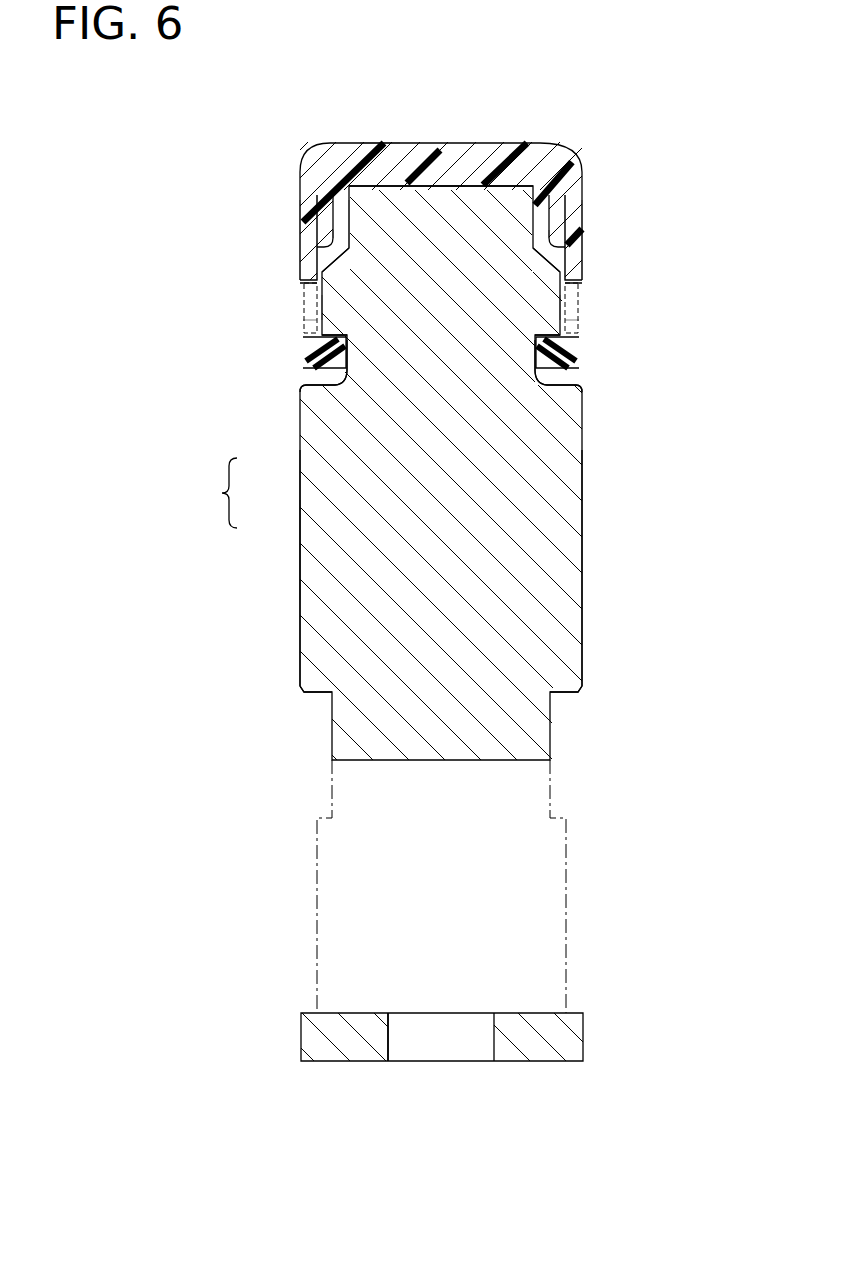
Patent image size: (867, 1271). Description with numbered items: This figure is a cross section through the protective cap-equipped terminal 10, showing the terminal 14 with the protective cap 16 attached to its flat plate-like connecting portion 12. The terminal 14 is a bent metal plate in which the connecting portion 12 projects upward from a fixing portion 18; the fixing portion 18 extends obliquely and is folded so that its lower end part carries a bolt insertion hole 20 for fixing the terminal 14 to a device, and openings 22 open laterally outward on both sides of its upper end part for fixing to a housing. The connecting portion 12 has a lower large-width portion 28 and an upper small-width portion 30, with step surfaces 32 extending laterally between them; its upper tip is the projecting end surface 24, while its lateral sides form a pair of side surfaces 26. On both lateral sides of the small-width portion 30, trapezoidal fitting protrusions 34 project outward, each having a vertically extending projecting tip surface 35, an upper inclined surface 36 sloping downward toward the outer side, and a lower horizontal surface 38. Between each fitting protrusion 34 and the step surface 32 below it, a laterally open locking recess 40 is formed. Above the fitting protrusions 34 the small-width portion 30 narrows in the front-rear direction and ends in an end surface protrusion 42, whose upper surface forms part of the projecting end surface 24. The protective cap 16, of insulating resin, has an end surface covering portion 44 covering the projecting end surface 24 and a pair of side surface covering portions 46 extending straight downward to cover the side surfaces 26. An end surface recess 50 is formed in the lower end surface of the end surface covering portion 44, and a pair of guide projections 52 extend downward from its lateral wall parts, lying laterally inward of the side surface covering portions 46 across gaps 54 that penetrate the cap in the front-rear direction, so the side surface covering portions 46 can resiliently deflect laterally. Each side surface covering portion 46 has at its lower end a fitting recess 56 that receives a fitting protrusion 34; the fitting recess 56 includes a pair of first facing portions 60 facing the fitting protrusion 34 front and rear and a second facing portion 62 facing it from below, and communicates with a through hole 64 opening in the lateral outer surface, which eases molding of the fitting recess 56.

The protective cap-equipped terminal 10 is at (637, 122).
The connecting portion 12 is at (218, 493).
The terminal 14 is at (604, 448).
The protective cap 16 is at (556, 135).
The fixing portion 18 is at (543, 1025).
The bolt insertion hole 20 is at (388, 1062).
The opening 22 is at (305, 697).
The projecting end surface 24 is at (430, 192).
The side surface 26 is at (300, 594).
The large-width portion 28 is at (420, 537).
The small-width portion 30 is at (440, 285).
The step surface 32 is at (338, 371).
The fitting protrusion 34 is at (325, 265).
The projecting tip surface 35 is at (322, 303).
The inclined surface 36 is at (330, 233).
The horizontal surface 38 is at (330, 346).
The locking recess 40 is at (340, 357).
The end surface protrusion 42 is at (452, 187).
The end surface covering portion 44 is at (386, 157).
The side surface covering portion 46 is at (304, 225).
The end surface recess 50 is at (488, 187).
The guide projection 52 is at (317, 210).
The gap 54 is at (329, 214).
The fitting recess 56 is at (317, 319).
The first facing portion 60 is at (318, 298).
The second facing portion 62 is at (335, 385).
The through hole 64 is at (307, 283).